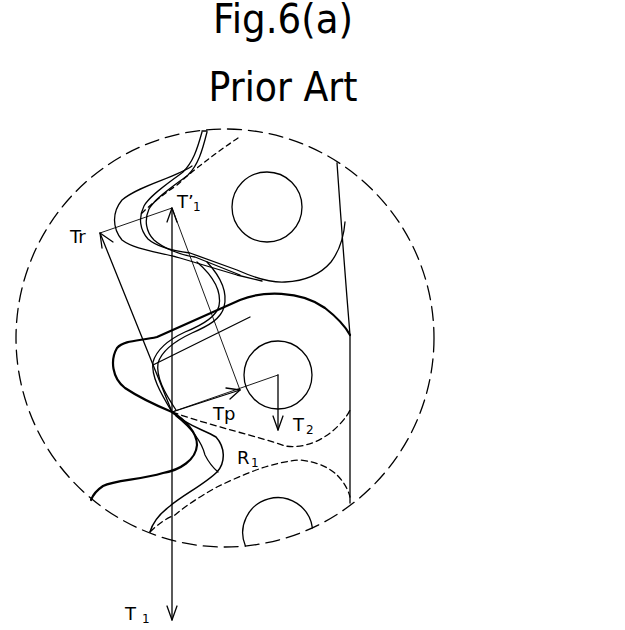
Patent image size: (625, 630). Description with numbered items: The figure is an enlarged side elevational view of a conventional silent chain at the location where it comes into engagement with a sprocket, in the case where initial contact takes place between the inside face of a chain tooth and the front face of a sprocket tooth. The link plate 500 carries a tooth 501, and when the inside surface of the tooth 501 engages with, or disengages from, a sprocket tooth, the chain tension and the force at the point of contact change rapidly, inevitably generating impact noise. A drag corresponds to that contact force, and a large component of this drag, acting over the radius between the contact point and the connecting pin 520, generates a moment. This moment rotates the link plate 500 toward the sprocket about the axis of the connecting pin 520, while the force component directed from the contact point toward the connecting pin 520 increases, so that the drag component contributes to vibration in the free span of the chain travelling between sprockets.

The link plate 500 is at (333, 453).
The tooth 501 is at (183, 378).
The connecting pin 520 is at (297, 365).